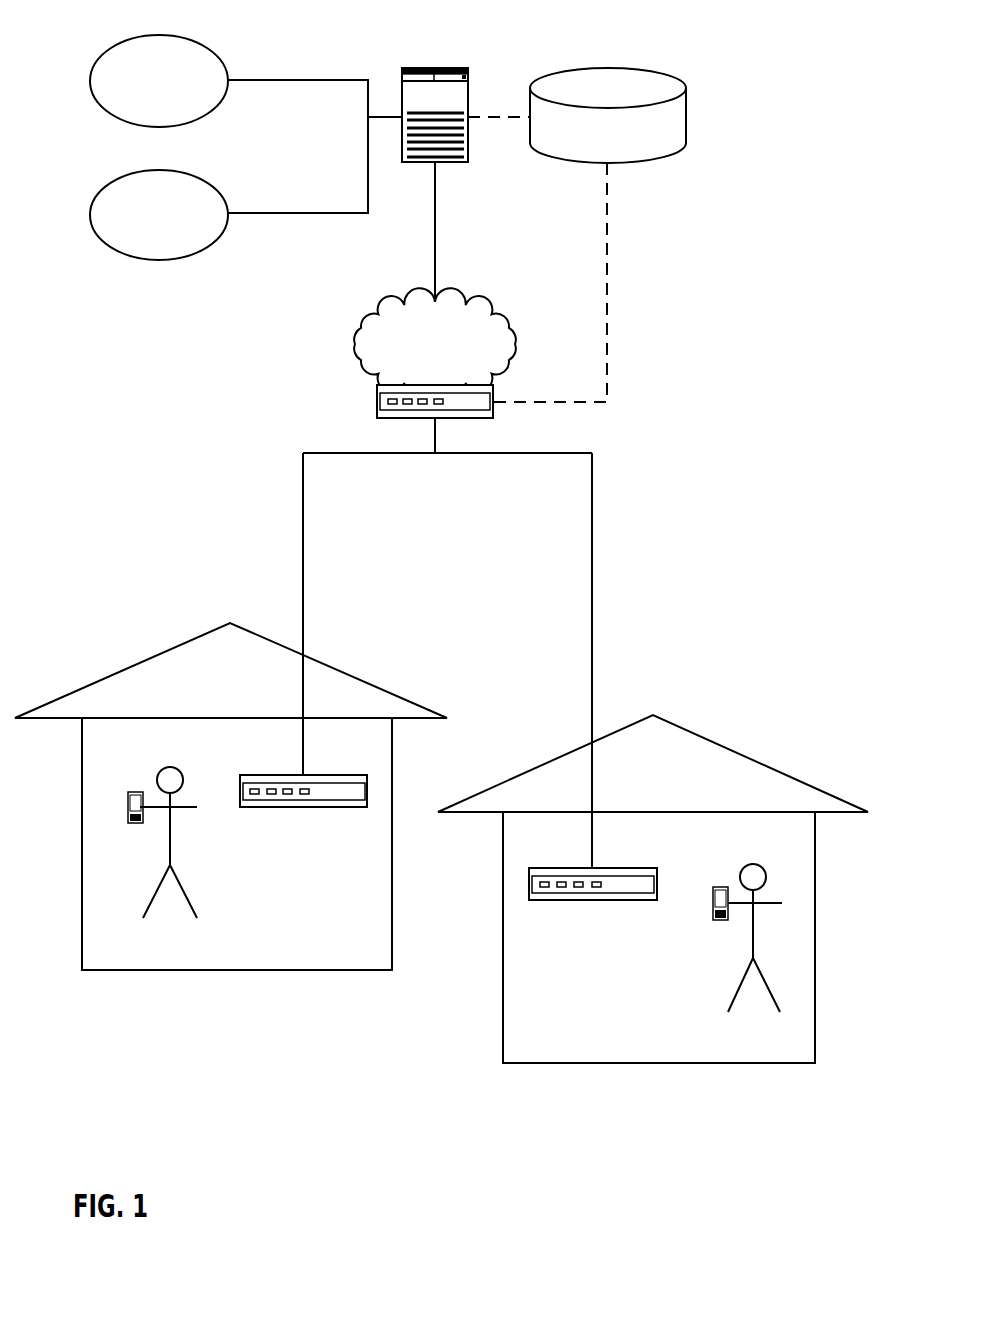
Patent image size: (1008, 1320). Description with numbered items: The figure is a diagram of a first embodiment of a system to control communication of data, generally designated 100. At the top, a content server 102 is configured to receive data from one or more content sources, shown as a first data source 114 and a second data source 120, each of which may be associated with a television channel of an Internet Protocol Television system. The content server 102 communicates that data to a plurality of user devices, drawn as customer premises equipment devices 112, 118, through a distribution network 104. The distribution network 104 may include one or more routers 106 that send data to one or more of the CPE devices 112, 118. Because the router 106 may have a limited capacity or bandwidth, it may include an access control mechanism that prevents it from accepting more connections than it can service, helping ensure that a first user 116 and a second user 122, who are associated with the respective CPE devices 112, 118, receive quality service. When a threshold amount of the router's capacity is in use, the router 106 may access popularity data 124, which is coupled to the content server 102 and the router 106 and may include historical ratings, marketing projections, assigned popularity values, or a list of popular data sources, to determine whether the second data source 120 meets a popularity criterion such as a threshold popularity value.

The system to control communication of data 100 is at (792, 213).
The content server 102 is at (435, 68).
The distribution network 104 is at (375, 318).
The router 106 is at (377, 398).
The customer premises equipment (CPE) device 112 is at (367, 790).
The first data source 114 is at (158, 35).
The first user 116 is at (171, 767).
The customer premises equipment (CPE) device 118 is at (529, 885).
The second data source 120 is at (158, 168).
The second user 122 is at (752, 864).
The popularity data 124 is at (607, 70).